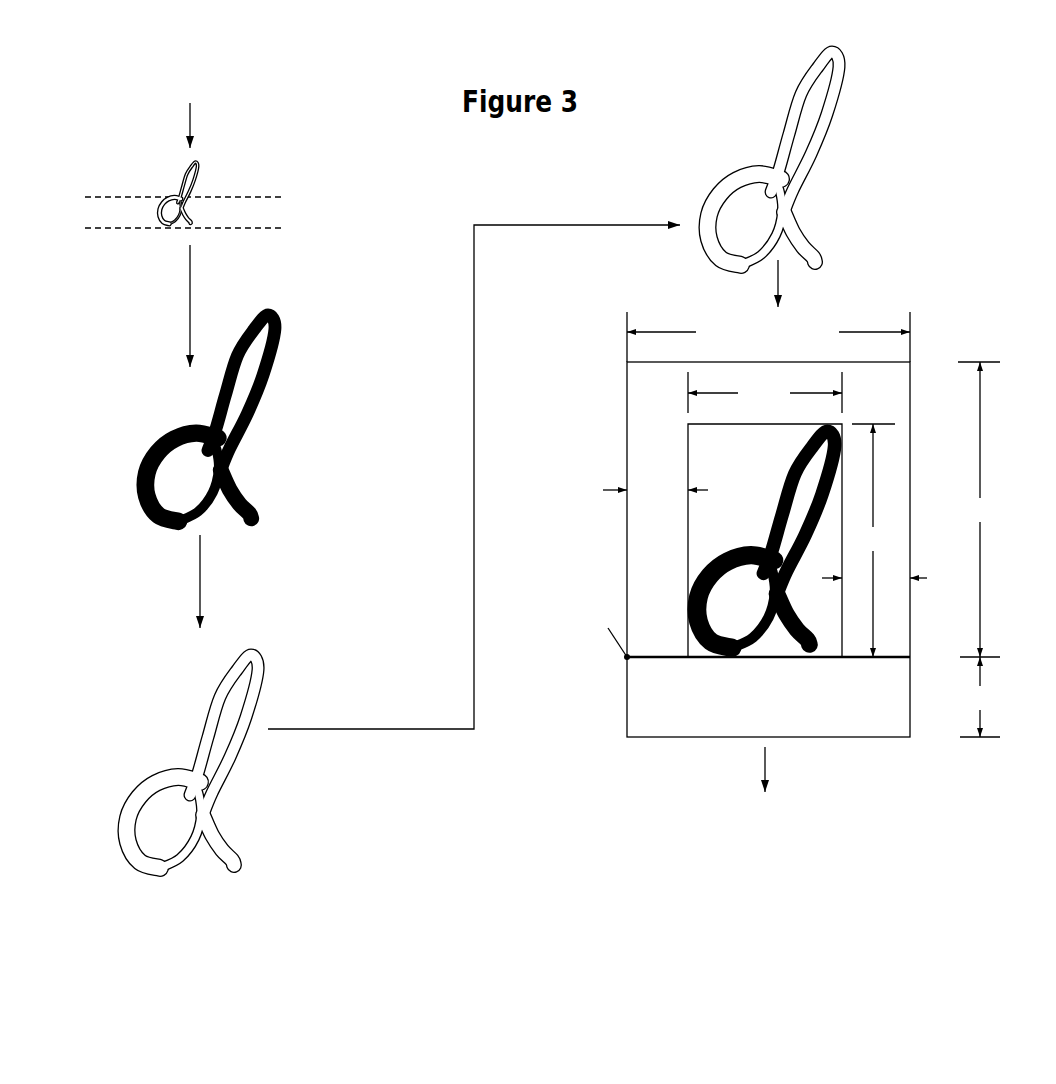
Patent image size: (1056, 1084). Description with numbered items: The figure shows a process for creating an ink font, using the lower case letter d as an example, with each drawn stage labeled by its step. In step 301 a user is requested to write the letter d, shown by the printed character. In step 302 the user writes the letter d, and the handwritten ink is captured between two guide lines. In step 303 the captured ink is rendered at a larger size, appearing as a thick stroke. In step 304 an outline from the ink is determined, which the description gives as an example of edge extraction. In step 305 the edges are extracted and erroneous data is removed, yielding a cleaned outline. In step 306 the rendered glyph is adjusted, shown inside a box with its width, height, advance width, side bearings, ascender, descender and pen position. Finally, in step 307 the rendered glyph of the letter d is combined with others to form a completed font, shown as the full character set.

The step of requesting the user to write the letter 301 is at (188, 72).
The step of the user writing the letter 302 is at (195, 175).
The step of rendering the captured ink at a larger size 303 is at (277, 350).
The step of determining an outline from the ink 304 is at (265, 663).
The step of extracting edges and removing erroneous data 305 is at (828, 130).
The step of adjusting the rendered glyph 306 is at (912, 366).
The step of combining the rendered glyph into a completed font 307 is at (927, 822).